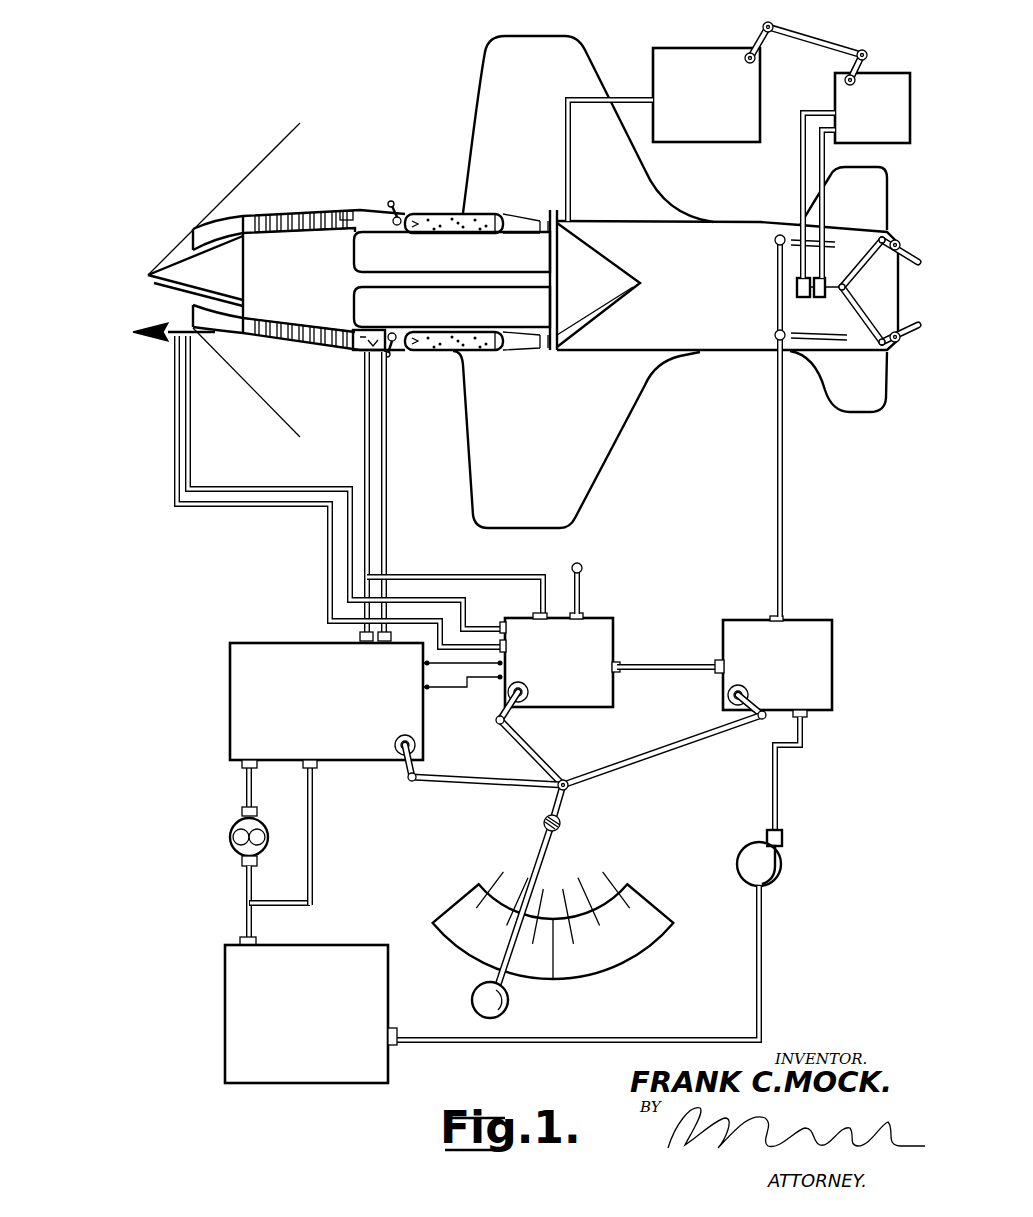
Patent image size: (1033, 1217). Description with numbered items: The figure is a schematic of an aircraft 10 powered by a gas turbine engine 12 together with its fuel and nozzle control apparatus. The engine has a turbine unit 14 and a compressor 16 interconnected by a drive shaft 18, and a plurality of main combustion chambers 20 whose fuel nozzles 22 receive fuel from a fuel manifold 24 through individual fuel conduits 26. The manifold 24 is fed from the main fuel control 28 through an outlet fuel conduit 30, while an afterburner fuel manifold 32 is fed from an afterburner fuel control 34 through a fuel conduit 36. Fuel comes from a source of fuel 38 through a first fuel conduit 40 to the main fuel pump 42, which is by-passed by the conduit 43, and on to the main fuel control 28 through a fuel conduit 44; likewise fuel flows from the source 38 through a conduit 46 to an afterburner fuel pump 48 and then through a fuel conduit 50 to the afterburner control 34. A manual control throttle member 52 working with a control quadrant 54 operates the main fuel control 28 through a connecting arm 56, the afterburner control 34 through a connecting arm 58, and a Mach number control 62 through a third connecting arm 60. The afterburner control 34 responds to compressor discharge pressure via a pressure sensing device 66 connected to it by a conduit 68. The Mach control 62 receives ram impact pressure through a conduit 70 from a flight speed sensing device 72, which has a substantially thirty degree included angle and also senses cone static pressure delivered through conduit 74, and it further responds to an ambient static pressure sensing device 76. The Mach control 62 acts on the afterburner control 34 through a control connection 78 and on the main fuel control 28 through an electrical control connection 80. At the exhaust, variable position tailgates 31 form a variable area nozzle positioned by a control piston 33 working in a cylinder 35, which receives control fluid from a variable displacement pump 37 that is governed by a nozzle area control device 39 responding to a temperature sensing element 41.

The aircraft 10 is at (483, 101).
The gas turbine engine 12 is at (485, 269).
The turbine unit 14 is at (557, 228).
The compressor 16 is at (297, 280).
The drive shaft 18 is at (487, 284).
The main combustion chambers 20 is at (478, 213).
The fuel nozzles 22 is at (397, 226).
The fuel manifold 24 is at (389, 356).
The individual fuel conduits 26 is at (398, 212).
The main fuel control 28 is at (232, 645).
The outlet fuel conduit 30 is at (388, 438).
The variable position tailgates 31 is at (905, 243).
The afterburner fuel manifold 32 is at (776, 333).
The control piston 33 is at (797, 284).
The afterburner fuel control 34 is at (828, 625).
The cylinder 35 is at (822, 298).
The fuel conduit 36 is at (784, 492).
The variable displacement pump 37 is at (875, 73).
The source of fuel 38 is at (232, 960).
The nozzle area control device 39 is at (725, 142).
The first fuel conduit 40 is at (246, 891).
The temperature sensing element 41 is at (569, 221).
The main fuel pump 42 is at (233, 838).
The by-pass conduit 43 is at (314, 846).
The fuel conduit 44 is at (245, 792).
The conduit 46 is at (762, 985).
The afterburner fuel pump 48 is at (775, 866).
The fuel conduit 50 is at (780, 788).
The manual control throttle member 52 is at (478, 992).
The control quadrant 54 is at (648, 950).
The connecting arm 56 is at (497, 794).
The connecting arm 58 is at (652, 758).
The third connecting arm 60 is at (530, 742).
The Mach number control 62 is at (604, 696).
The pressure sensing device 66 is at (363, 352).
The conduit 68 is at (418, 575).
The conduit 70 is at (282, 486).
The flight speed sensing device 72 is at (163, 342).
The conduit 74 is at (257, 506).
The ambient static pressure sensing device 76 is at (584, 562).
The control connection 78 is at (653, 664).
The electrical control connection 80 is at (441, 670).